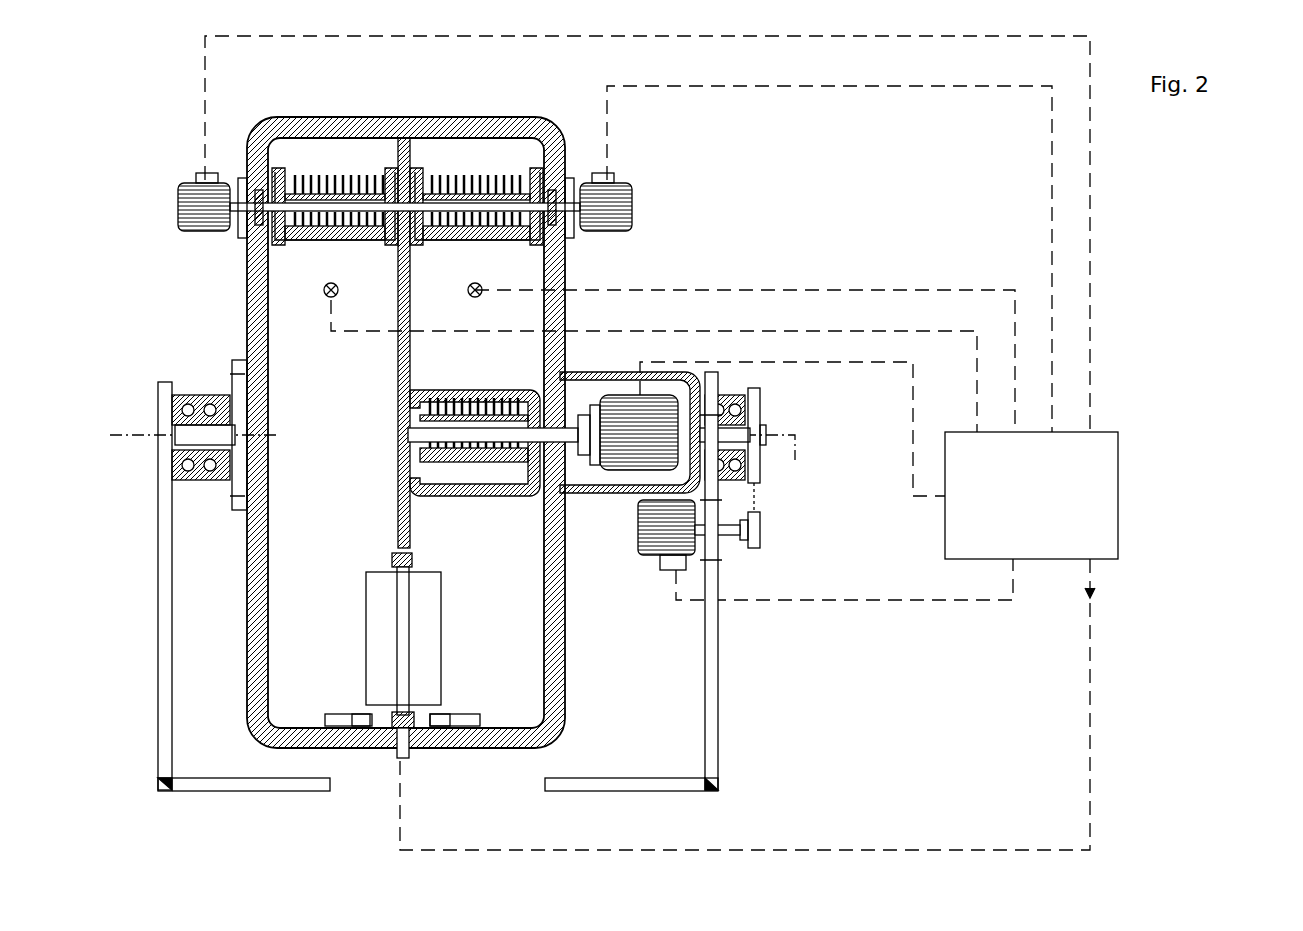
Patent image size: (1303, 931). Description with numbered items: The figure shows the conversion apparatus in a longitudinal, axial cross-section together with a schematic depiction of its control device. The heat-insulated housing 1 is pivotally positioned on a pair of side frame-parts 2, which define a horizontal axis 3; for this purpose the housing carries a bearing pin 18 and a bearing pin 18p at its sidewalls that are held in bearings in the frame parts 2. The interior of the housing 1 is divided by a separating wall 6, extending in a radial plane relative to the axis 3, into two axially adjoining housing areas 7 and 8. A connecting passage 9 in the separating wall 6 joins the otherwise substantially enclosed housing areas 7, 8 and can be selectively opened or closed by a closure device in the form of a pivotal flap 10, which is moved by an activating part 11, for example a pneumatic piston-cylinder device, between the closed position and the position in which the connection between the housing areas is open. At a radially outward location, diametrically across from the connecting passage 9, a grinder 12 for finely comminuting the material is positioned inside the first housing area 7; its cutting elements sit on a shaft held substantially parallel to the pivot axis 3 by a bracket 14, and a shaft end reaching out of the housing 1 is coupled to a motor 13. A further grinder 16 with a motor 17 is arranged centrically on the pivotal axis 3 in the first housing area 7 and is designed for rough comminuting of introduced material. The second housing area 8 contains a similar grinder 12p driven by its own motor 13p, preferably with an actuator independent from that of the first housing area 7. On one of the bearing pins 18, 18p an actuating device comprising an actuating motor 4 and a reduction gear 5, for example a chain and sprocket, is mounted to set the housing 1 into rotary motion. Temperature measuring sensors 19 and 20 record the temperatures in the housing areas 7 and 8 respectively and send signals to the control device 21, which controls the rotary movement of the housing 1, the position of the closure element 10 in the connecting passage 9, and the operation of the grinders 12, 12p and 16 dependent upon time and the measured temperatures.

The housing 1 is at (548, 650).
The side frame-parts 2 is at (718, 672).
The horizontal axis 3 is at (118, 438).
The actuating motor 4 is at (650, 540).
The reduction gear 5 is at (755, 493).
The separating wall 6 is at (398, 378).
The first housing area 7 is at (480, 539).
The second housing area 8 is at (334, 539).
The connecting passage 9 is at (398, 580).
The closure device 10 is at (425, 625).
The activating part 11 is at (398, 750).
The grinder 12 is at (472, 175).
The grinder 12p is at (315, 175).
The motor 13 is at (610, 228).
The motor 13p is at (200, 228).
The bracket 14 is at (444, 248).
The further grinder 16 is at (474, 398).
The motor 17 is at (622, 470).
The bearing pin 18 is at (735, 430).
The bearing pin 18p is at (200, 420).
The temperature measuring sensor 19 is at (478, 298).
The temperature measuring sensor 20 is at (326, 298).
The control device 21 is at (1120, 500).